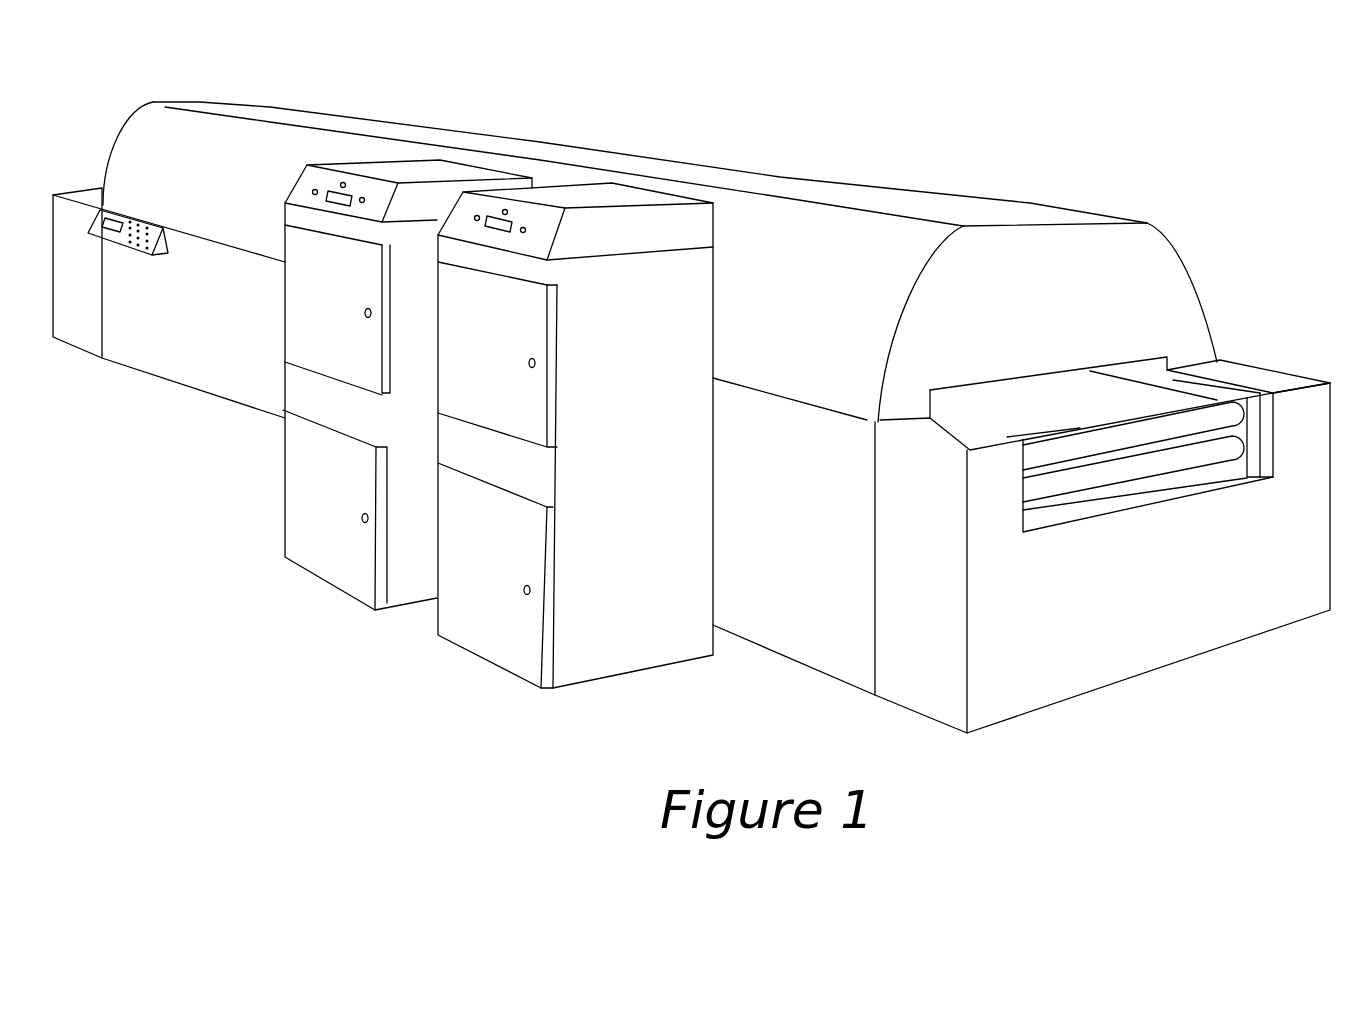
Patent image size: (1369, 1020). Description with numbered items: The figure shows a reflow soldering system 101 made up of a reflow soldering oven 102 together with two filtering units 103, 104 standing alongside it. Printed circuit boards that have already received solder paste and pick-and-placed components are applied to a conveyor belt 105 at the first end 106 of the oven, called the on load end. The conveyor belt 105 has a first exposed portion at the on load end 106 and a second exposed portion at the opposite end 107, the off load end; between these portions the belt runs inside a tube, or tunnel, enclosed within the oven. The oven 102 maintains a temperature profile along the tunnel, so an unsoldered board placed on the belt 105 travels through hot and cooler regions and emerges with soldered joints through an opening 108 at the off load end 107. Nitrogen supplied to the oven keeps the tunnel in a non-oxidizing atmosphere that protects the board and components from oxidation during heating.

The reflow soldering system 101 is at (754, 153).
The reflow soldering oven 102 is at (1018, 218).
The filtering unit 103 is at (423, 170).
The filtering unit 104 is at (588, 197).
The conveyor belt 105 is at (1083, 409).
The first end 106 is at (73, 190).
The opposite end 107 is at (1297, 387).
The opening 108 is at (1120, 362).